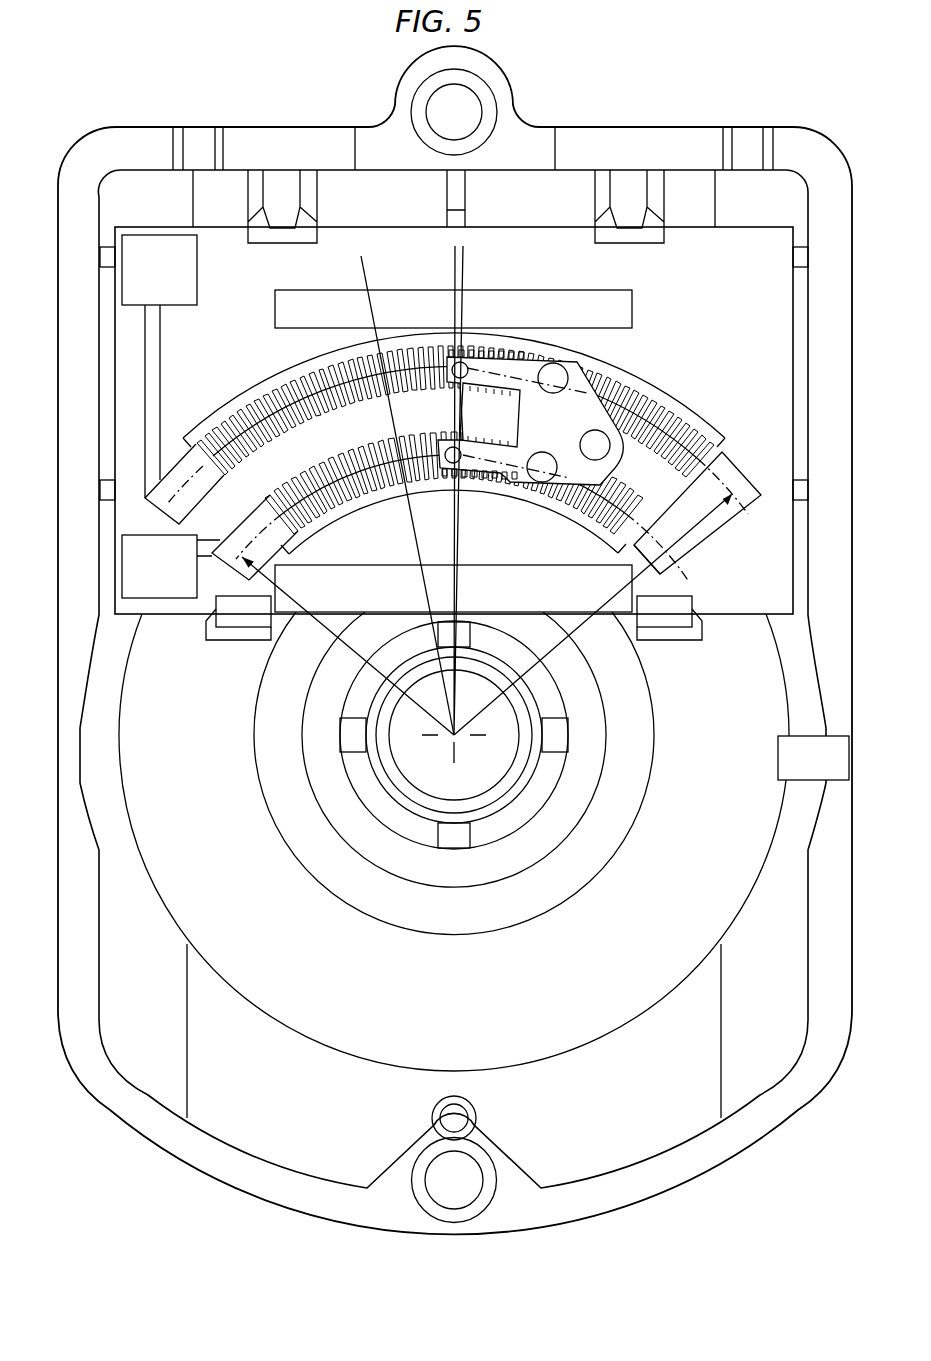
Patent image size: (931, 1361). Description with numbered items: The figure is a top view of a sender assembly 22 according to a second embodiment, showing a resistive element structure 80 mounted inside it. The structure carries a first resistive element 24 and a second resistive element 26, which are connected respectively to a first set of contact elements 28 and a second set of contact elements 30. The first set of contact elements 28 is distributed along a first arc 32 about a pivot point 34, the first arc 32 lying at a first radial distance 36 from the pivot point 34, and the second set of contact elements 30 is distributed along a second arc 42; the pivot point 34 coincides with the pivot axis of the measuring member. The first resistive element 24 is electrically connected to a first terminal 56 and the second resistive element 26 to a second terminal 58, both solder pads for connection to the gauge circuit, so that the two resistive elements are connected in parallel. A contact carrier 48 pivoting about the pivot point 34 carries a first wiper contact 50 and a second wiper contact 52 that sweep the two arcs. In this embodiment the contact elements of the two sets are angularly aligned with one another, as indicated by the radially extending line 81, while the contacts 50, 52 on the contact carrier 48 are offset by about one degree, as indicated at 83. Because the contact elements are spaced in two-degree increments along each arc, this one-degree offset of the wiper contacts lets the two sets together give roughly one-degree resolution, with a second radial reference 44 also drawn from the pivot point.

The sender assembly 22 is at (624, 106).
The first resistive element 24 is at (506, 600).
The second resistive element 26 is at (546, 323).
The first set of contact elements 28 is at (486, 493).
The second set of contact elements 30 is at (272, 378).
The first arc 32 is at (690, 582).
The pivot point 34 is at (448, 740).
The first radial distance 36 is at (322, 626).
The second arc 42 is at (738, 497).
The second radial reference line 44 is at (588, 628).
The contact carrier 48 is at (541, 435).
The first wiper contact 50 is at (445, 442).
The second wiper contact 52 is at (490, 415).
The first terminal 56 is at (146, 583).
The second terminal 58 is at (146, 283).
The resistive element structure 80 is at (719, 302).
The radially extending line 81 is at (361, 260).
The offset of the contacts 83 is at (463, 265).